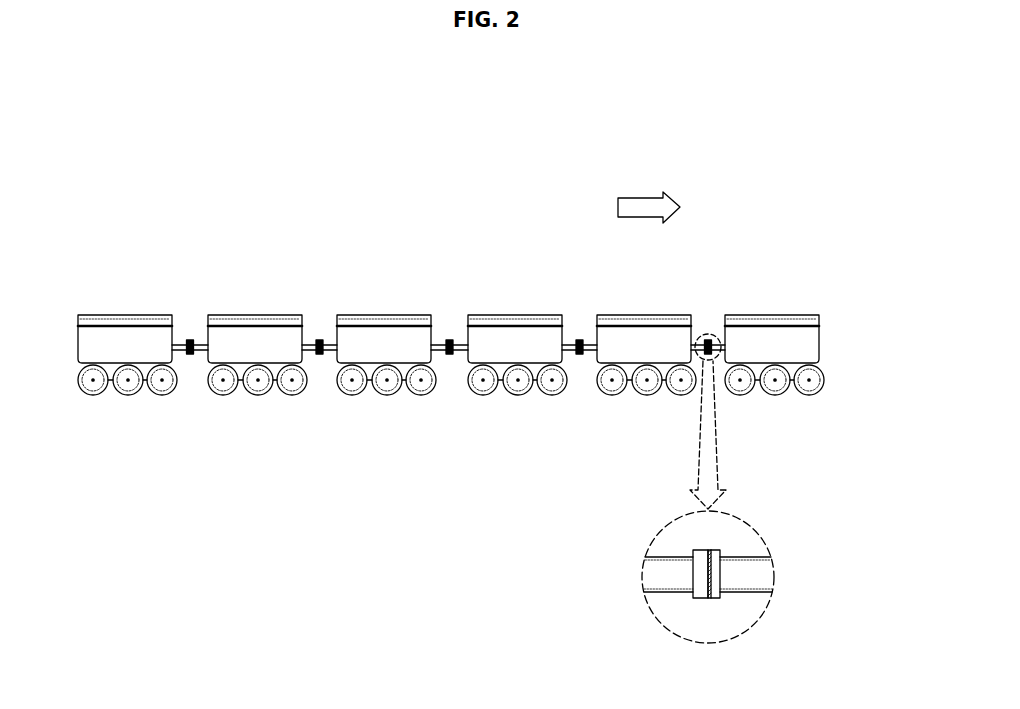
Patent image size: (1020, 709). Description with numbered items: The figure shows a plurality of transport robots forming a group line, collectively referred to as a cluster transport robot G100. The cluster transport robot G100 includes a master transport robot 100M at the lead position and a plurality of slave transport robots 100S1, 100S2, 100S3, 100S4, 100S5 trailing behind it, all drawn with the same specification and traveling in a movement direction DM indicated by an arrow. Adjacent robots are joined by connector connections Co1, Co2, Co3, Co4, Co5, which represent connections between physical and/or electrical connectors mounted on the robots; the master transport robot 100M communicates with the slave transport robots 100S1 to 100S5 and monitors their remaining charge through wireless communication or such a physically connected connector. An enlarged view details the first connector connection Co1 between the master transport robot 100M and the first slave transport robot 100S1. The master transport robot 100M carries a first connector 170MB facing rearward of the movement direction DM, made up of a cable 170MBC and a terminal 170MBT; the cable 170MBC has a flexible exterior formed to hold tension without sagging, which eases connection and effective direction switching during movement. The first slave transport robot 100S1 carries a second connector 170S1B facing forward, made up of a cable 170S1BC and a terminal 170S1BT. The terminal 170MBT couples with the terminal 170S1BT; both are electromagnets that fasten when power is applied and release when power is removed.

The cluster transport robot G100 is at (95, 256).
The master transport robot 100M is at (775, 396).
The first slave transport robot 100S1 is at (647, 396).
The second slave transport robot 100S2 is at (518, 396).
The third slave transport robot 100S3 is at (387, 396).
The fourth slave transport robot 100S4 is at (258, 396).
The fifth slave transport robot 100S5 is at (128, 396).
The first connector connection Co1 is at (706, 336).
The second connector connection Co2 is at (578, 338).
The third connector connection Co3 is at (448, 338).
The fourth connector connection Co4 is at (318, 338).
The fifth connector connection Co5 is at (188, 338).
The movement direction DM is at (649, 193).
The second connector 170S1B is at (575, 601).
The cable 170S1BC is at (658, 580).
The terminal 170S1BT is at (701, 598).
The first connector 170MB is at (836, 601).
The cable 170MBC is at (762, 578).
The terminal 170MBT is at (713, 598).